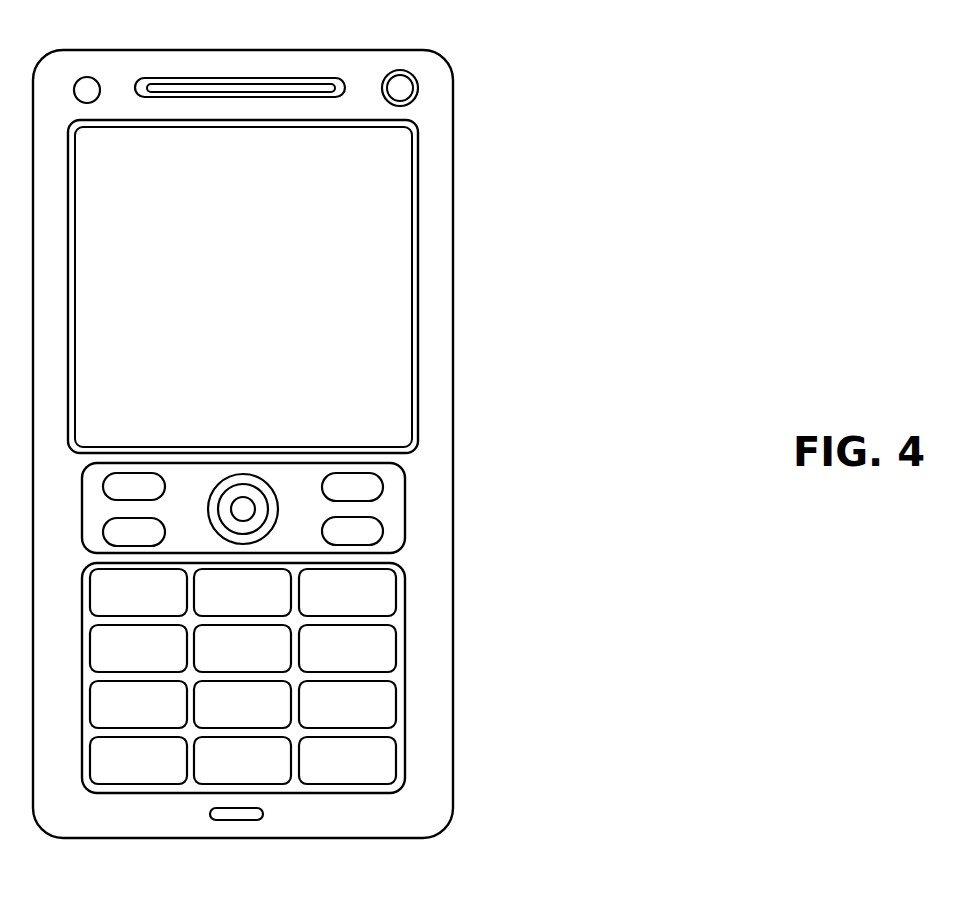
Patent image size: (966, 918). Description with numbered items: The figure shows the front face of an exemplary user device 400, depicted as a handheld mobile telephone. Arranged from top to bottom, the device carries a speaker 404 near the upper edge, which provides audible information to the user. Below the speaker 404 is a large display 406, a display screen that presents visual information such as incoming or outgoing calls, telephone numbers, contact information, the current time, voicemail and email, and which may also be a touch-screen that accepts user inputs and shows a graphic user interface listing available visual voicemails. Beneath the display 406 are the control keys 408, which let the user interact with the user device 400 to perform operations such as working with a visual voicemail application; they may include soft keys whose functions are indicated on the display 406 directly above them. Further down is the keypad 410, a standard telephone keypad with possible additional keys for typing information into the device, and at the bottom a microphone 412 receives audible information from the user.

The user device 400 is at (789, 145).
The speaker 404 is at (210, 77).
The display 406 is at (417, 200).
The control keys 408 is at (405, 513).
The keypad 410 is at (405, 687).
The microphone 412 is at (210, 817).